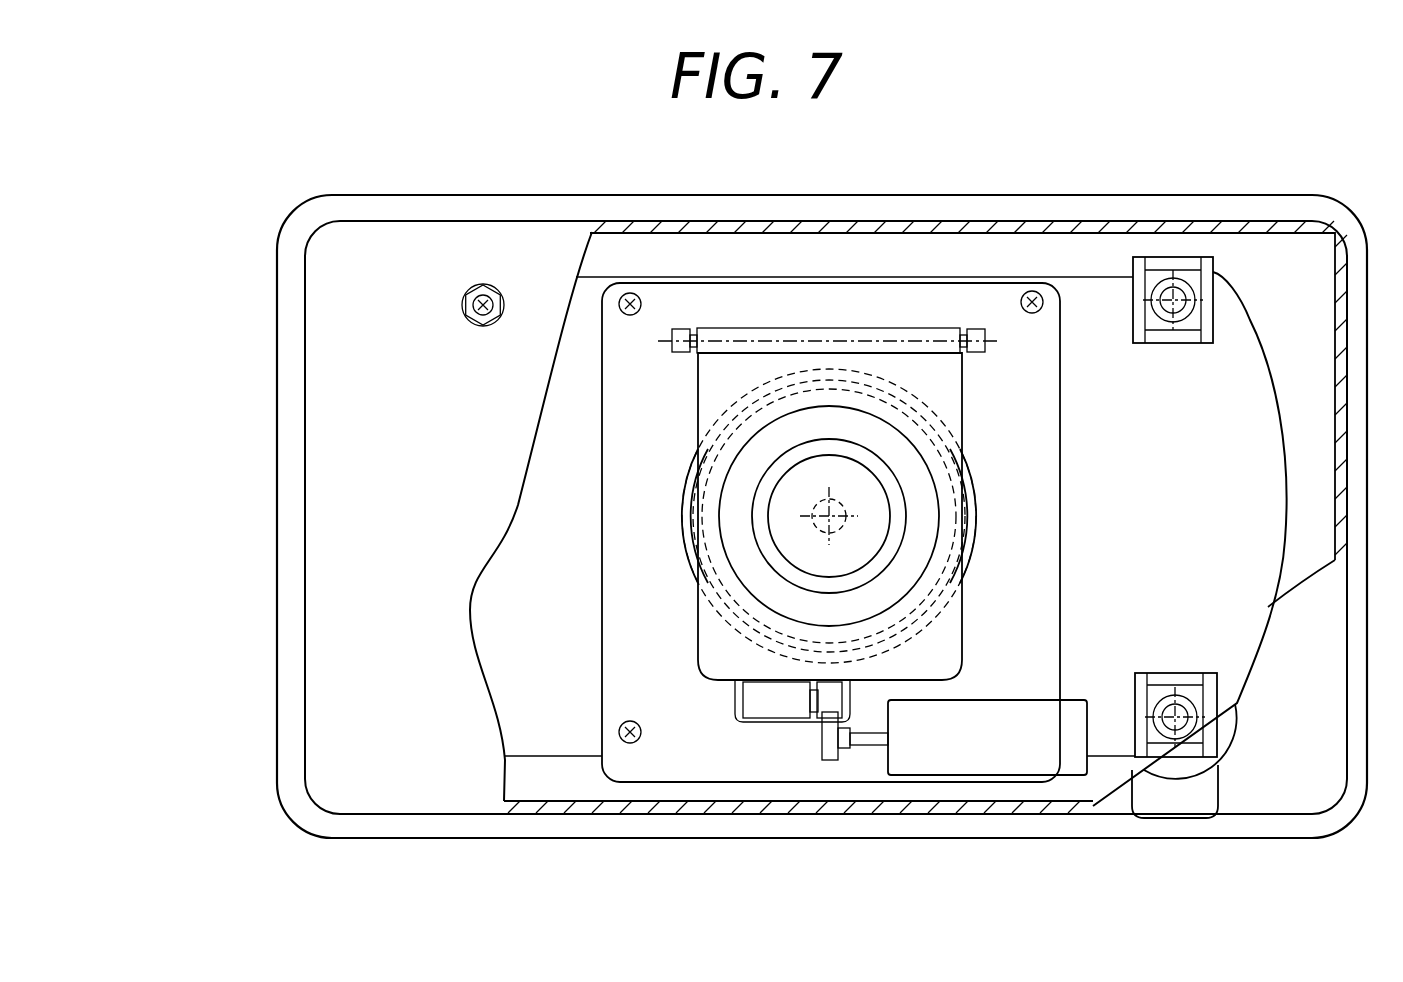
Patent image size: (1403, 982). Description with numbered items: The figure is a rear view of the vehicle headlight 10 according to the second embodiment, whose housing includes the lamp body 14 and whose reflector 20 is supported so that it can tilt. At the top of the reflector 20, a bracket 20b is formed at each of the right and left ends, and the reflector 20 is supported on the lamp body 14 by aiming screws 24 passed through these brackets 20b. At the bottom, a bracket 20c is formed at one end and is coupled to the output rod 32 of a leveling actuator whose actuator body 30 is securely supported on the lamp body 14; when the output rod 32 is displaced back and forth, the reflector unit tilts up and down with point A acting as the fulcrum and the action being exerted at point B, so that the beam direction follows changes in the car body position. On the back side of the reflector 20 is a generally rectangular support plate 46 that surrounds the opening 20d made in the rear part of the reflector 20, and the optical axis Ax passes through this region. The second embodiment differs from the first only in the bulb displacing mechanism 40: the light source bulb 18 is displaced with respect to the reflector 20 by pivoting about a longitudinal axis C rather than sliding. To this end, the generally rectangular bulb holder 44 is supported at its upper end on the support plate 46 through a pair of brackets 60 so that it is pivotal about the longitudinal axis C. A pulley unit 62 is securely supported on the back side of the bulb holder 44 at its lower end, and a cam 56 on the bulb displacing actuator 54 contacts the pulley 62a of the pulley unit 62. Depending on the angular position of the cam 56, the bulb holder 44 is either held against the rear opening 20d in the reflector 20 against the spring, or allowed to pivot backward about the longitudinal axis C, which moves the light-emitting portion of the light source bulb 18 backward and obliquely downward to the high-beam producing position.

The vehicle headlight 10 is at (478, 188).
The lamp body 14 is at (975, 195).
The light source bulb 18 is at (812, 505).
The reflector 20 is at (1250, 313).
The bracket 20b is at (1150, 343).
The bracket 20c is at (1165, 675).
The opening 20d is at (968, 512).
The aiming screws 24 is at (478, 326).
The actuator body 30 is at (1233, 730).
The output rod 32 is at (1187, 700).
The bulb displacing mechanism 40 is at (800, 792).
The bulb holder 44 is at (968, 617).
The support plate 46 is at (1062, 520).
The bulb displacing actuator 54 is at (1000, 700).
The cam 56 is at (823, 740).
The brackets 60 is at (672, 352).
The pulley unit 62 is at (750, 722).
The pulley 62a is at (838, 696).
The point A is at (1147, 312).
The point B is at (1157, 718).
The longitudinal axis C is at (817, 342).
The optical axis Ax is at (827, 522).